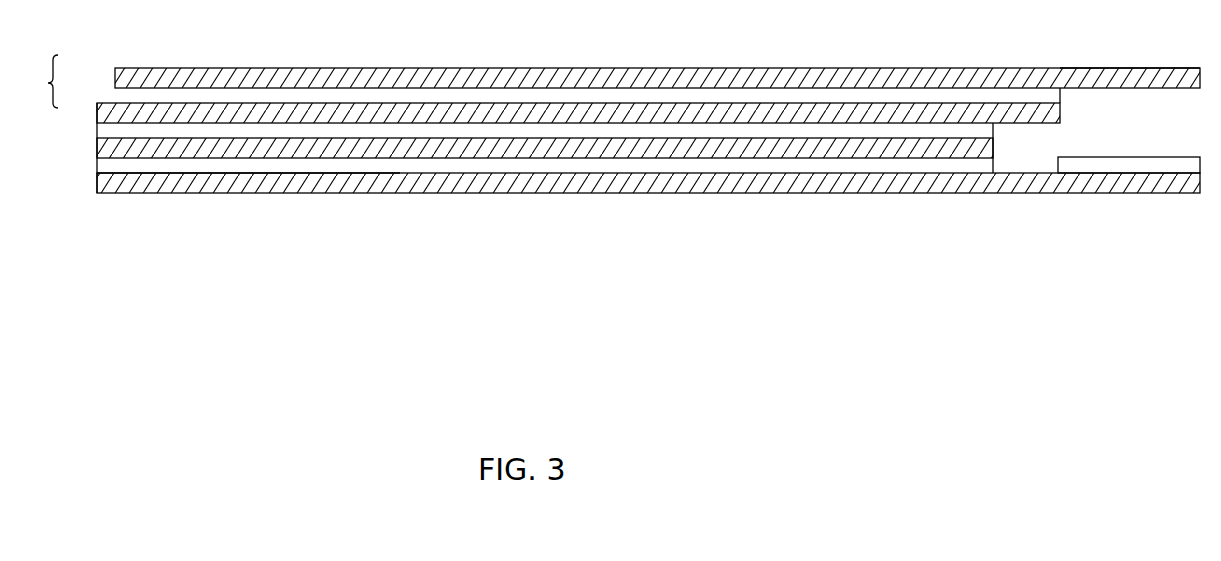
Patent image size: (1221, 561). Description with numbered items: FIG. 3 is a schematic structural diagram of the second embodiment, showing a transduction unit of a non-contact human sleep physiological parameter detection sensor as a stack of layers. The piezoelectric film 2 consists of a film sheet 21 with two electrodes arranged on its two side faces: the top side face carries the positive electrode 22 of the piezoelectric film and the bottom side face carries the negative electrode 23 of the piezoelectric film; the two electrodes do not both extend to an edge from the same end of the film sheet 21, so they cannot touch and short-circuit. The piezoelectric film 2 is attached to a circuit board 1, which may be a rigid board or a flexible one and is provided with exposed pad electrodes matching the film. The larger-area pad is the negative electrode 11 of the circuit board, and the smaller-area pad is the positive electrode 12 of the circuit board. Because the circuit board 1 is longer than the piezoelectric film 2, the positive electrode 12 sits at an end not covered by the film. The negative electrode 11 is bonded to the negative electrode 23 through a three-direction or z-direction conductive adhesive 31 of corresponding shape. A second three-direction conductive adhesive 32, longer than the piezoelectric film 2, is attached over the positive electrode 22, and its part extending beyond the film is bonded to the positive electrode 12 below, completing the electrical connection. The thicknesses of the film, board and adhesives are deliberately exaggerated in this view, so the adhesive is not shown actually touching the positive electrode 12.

The circuit board 1 is at (365, 185).
The negative electrode of the circuit board 11 is at (177, 171).
The positive electrode of the circuit board 12 is at (1113, 170).
The piezoelectric film 2 is at (47, 81).
The film sheet 21 is at (103, 110).
The positive electrode of the piezoelectric film 22 is at (122, 97).
The negative electrode of the piezoelectric film 23 is at (97, 132).
The conductive adhesive 31 is at (97, 155).
The conductive adhesive 32 is at (1123, 70).